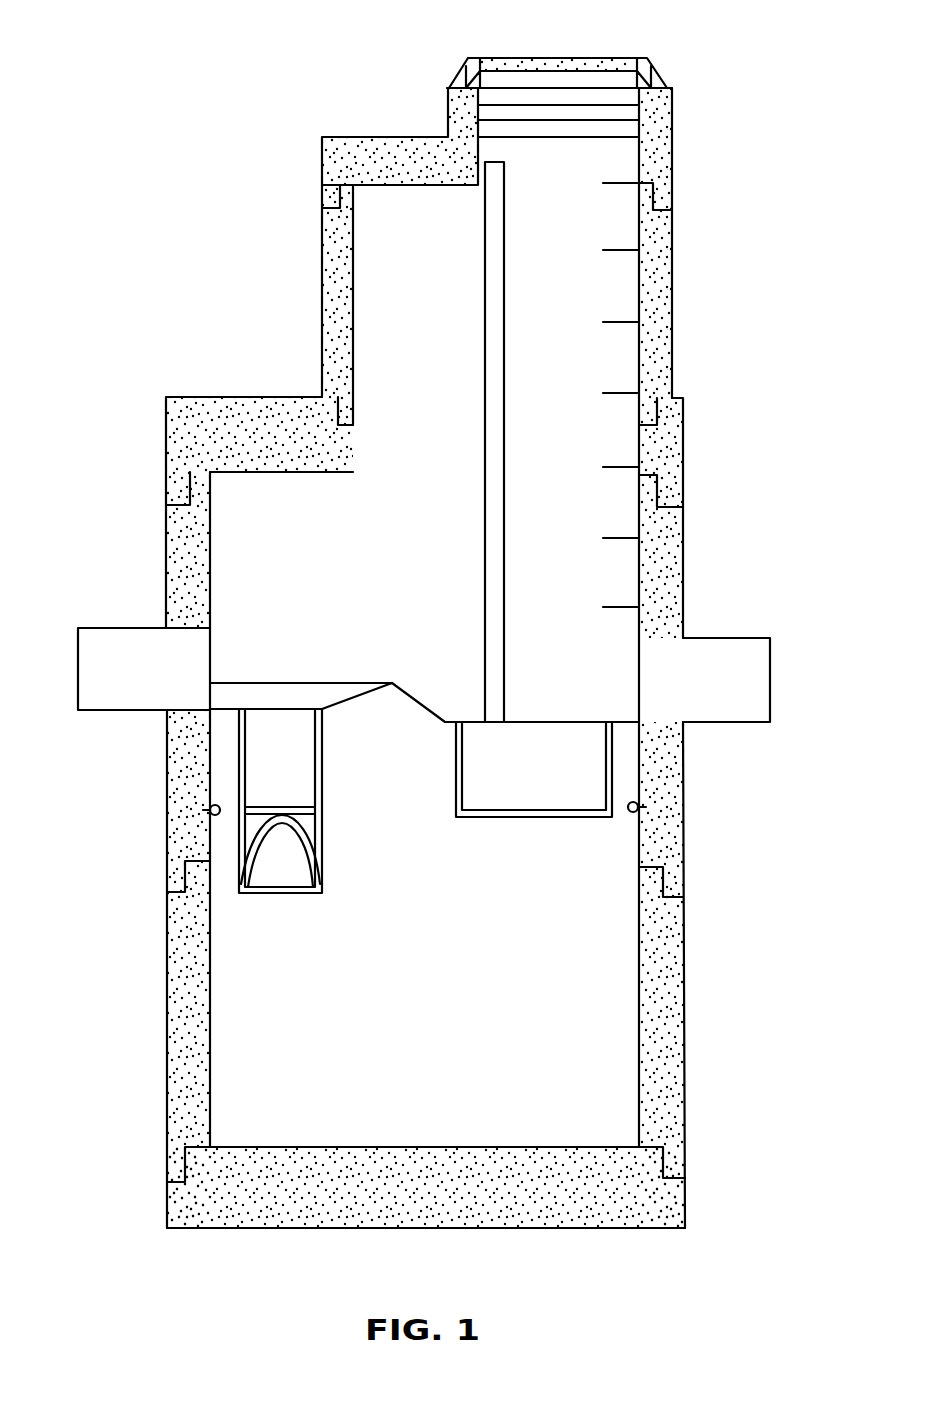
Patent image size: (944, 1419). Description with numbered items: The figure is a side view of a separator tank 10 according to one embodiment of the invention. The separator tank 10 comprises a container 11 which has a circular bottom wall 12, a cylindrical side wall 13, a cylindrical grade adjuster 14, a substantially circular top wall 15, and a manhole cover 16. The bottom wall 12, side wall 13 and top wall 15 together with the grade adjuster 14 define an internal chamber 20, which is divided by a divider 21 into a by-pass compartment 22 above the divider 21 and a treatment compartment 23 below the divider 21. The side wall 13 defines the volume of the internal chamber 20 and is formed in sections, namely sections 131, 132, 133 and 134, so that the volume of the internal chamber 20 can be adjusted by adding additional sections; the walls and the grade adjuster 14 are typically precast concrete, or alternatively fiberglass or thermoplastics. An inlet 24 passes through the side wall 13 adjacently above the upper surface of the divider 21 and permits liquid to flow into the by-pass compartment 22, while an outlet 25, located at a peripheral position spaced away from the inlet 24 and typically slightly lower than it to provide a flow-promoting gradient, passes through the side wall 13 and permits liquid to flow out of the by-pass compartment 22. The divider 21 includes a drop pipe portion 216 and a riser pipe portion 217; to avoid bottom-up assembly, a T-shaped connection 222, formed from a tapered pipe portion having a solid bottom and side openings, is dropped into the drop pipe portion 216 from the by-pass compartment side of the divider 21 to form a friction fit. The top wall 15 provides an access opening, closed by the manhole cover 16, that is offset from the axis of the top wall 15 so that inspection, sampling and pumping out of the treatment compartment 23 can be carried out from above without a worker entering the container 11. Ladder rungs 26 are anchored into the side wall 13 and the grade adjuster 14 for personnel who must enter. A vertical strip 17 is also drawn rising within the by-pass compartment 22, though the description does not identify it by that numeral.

The separator tank 10 is at (110, 280).
The container 11 is at (696, 552).
The bottom wall 12 is at (615, 1147).
The side wall 13 is at (685, 930).
The section 131 is at (165, 1005).
The section 132 is at (165, 805).
The section 133 is at (165, 580).
The section 134 is at (163, 437).
The grade adjuster 14 is at (320, 292).
The top wall 15 is at (360, 137).
The manhole cover 16 is at (620, 57).
The level indicator strip 17 is at (505, 307).
The internal chamber 20 is at (240, 560).
The divider 21 is at (620, 722).
The by-pass compartment 22 is at (393, 618).
The treatment compartment 23 is at (393, 1050).
The inlet 24 is at (92, 672).
The outlet 25 is at (765, 680).
The ladder rungs 26 is at (615, 183).
The drop pipe portion 216 is at (322, 780).
The riser pipe portion 217 is at (612, 775).
The T-shaped connection 222 is at (322, 883).